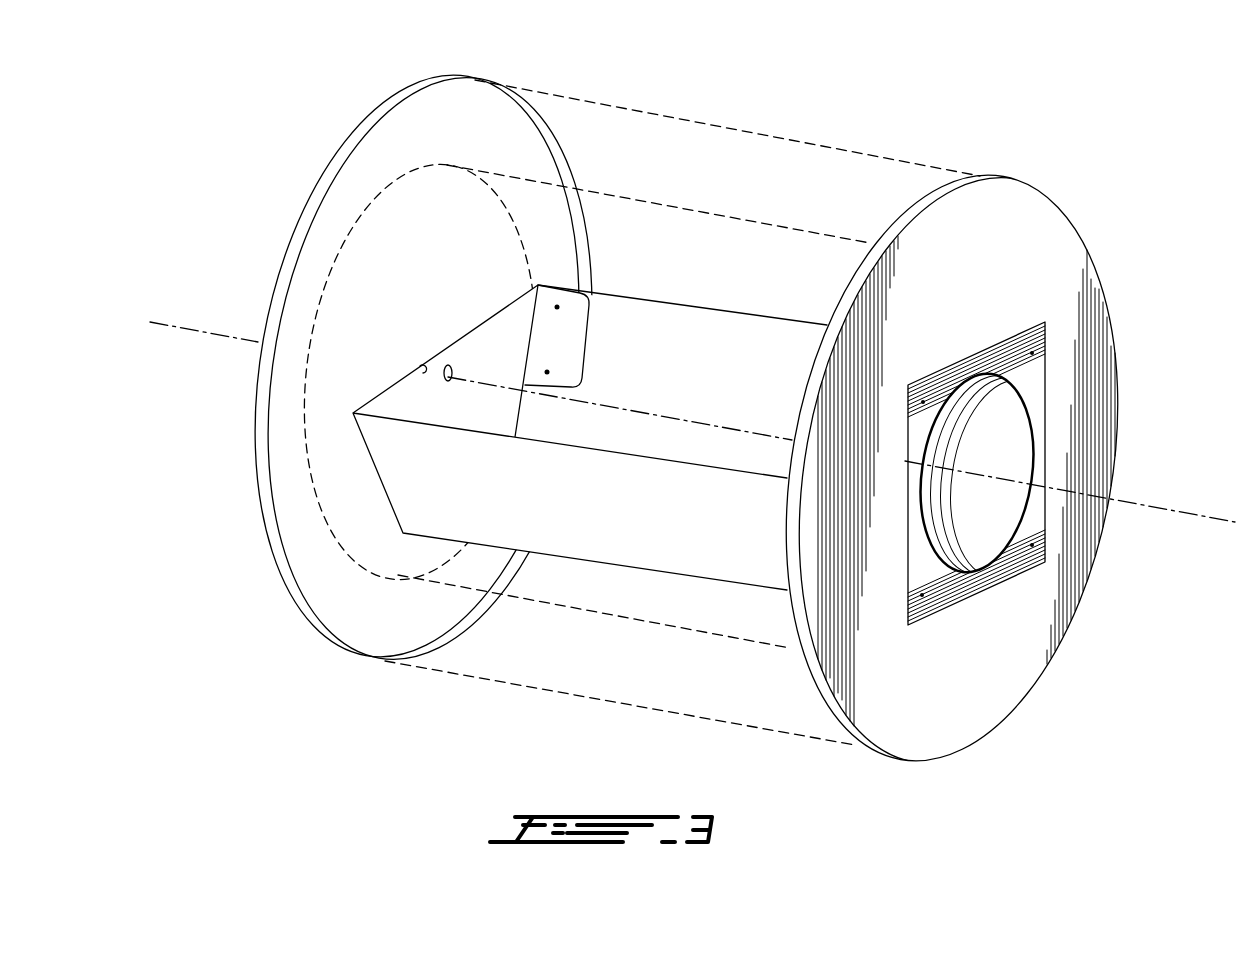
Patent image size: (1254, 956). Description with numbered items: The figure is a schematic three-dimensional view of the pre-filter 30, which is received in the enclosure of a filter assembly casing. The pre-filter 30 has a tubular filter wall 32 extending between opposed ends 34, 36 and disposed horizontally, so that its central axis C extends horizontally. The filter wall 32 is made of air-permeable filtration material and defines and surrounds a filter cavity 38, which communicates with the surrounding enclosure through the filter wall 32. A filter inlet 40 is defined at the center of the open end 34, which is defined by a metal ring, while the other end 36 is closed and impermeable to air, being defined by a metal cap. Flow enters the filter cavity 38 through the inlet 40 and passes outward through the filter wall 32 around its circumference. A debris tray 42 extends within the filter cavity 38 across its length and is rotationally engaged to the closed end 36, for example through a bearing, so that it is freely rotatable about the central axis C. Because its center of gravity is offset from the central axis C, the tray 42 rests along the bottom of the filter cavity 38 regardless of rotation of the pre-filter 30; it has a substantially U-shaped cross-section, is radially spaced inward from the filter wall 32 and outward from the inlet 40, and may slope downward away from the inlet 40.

The pre-filter 30 is at (690, 419).
The tubular filter wall 32 is at (855, 160).
The open end 34 is at (1020, 249).
The closed end 36 is at (350, 296).
The filter cavity 38 is at (672, 237).
The filter inlet 40 is at (960, 436).
The debris tray 42 is at (412, 522).
The central axis C is at (1163, 512).